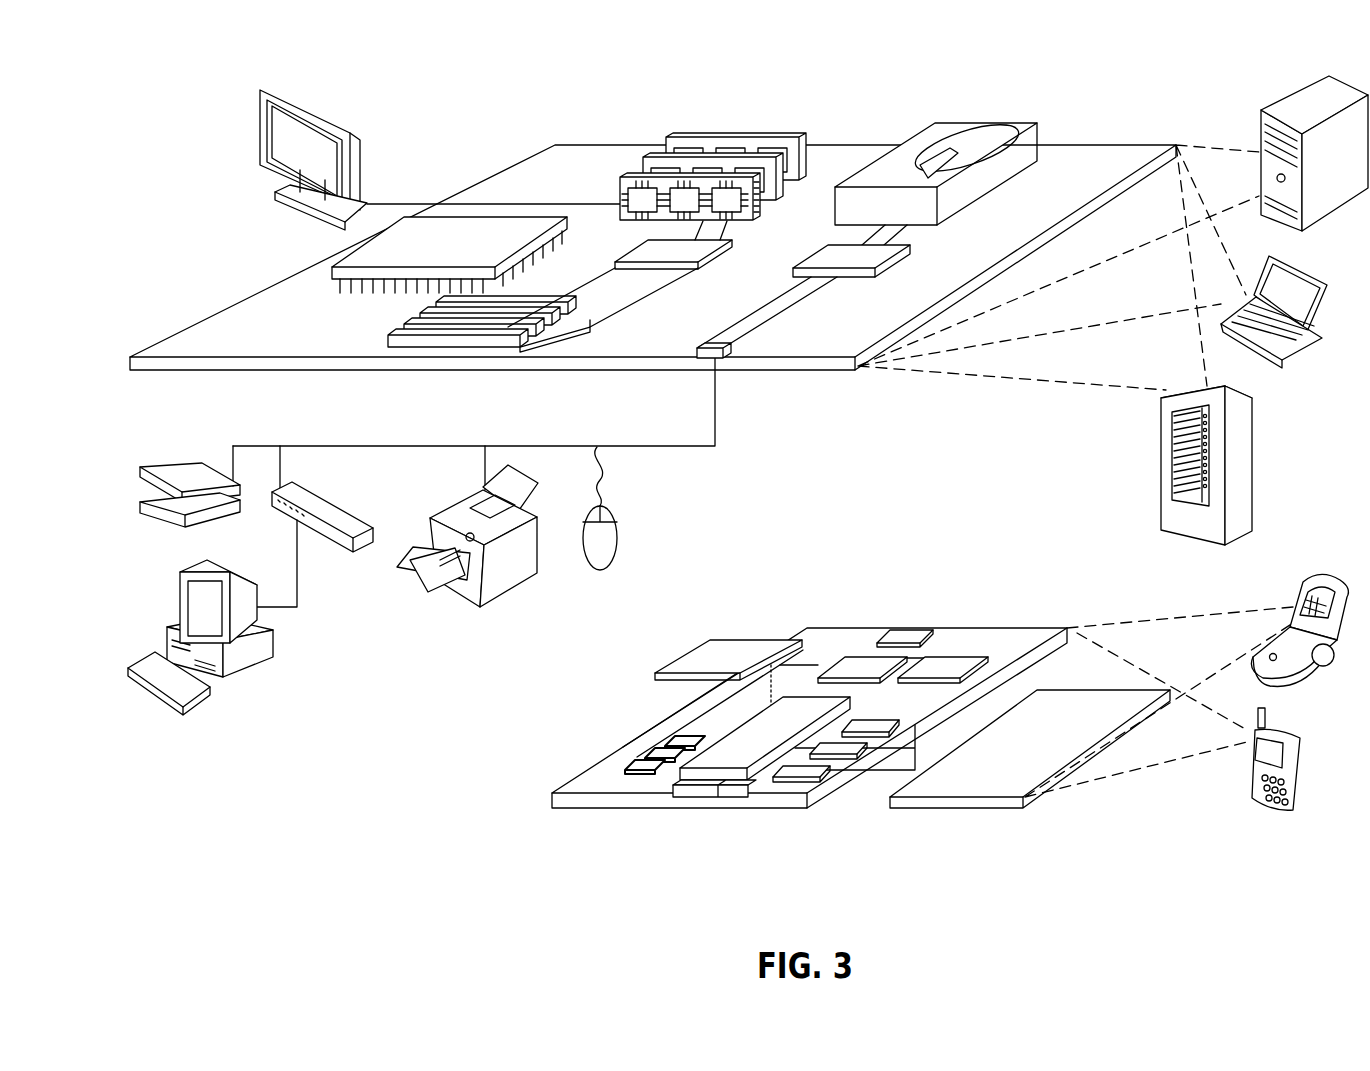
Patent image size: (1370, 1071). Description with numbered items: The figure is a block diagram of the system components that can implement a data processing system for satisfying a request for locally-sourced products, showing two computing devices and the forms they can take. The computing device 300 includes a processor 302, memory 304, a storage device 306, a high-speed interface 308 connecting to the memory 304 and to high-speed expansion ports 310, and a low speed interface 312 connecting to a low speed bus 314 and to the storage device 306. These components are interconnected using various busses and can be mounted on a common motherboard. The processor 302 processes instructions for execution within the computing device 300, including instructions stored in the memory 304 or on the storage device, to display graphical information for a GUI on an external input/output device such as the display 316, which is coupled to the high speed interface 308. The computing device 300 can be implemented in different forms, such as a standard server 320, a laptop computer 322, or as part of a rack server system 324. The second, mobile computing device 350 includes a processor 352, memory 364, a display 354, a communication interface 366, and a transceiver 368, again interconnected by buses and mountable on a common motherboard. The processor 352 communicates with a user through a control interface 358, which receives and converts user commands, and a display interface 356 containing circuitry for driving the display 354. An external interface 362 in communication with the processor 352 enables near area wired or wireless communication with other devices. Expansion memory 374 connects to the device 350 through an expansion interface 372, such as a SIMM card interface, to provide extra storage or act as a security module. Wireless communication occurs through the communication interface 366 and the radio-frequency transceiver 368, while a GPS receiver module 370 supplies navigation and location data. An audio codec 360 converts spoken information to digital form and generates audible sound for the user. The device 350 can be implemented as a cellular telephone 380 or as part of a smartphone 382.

The computing device 300 is at (466, 113).
The processor 302 is at (337, 270).
The memory 304 is at (720, 134).
The storage device 306 is at (932, 125).
The high-speed interface 308 is at (648, 250).
The high-speed expansion ports 310 is at (403, 328).
The low speed interface 312 is at (832, 253).
The low speed bus 314 is at (722, 360).
The display 316 is at (262, 92).
The standard server 320 is at (1262, 131).
The laptop computer 322 is at (1281, 362).
The rack server system 324 is at (1160, 489).
The computing device 350 is at (521, 809).
The processor 352 is at (737, 762).
The display 354 is at (987, 780).
The display interface 356 is at (810, 769).
The control interface 358 is at (866, 745).
The audio codec 360 is at (878, 724).
The external interface 362 is at (703, 797).
The memory 364 is at (650, 755).
The communication interface 366 is at (853, 665).
The transceiver 368 is at (938, 665).
The GPS receiver module 370 is at (912, 628).
The expansion interface 372 is at (803, 640).
The expansion memory 374 is at (700, 641).
The cellular telephone 380 is at (1297, 612).
The smartphone 382 is at (1242, 763).